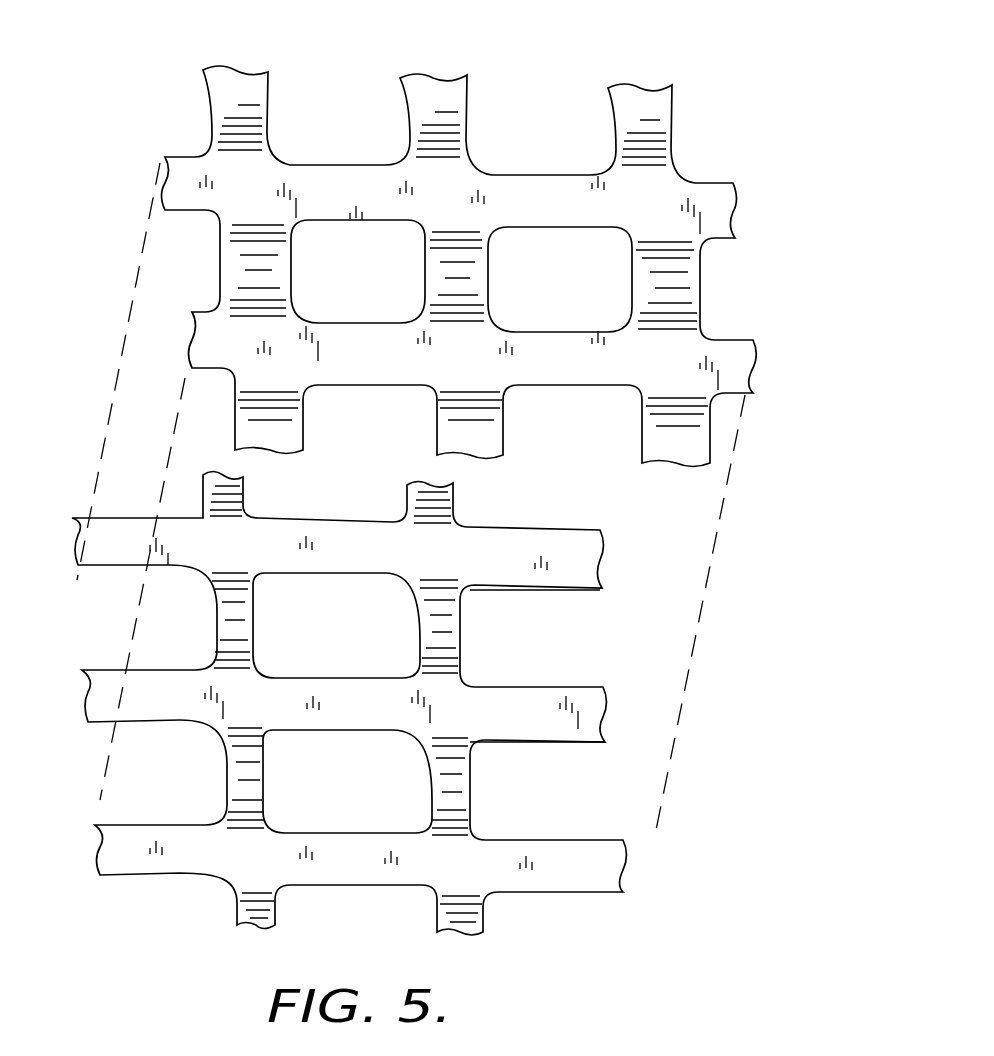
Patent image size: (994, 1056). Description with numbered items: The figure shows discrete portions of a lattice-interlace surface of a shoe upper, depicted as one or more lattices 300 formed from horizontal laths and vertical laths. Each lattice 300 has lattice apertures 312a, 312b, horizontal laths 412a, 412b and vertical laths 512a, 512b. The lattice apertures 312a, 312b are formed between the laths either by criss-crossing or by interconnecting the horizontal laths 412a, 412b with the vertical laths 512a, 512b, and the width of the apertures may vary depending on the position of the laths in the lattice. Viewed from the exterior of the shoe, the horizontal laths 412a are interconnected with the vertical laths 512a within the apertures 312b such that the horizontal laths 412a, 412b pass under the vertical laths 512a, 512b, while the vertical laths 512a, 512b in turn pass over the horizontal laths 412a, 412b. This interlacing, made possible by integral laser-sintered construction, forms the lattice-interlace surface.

The lattice 300 is at (772, 279).
The lattice aperture 312a is at (379, 238).
The lattice aperture 312b is at (316, 815).
The horizontal lath 412a is at (252, 345).
The horizontal lath 412b is at (578, 702).
The vertical lath 512a is at (655, 437).
The vertical lath 512b is at (250, 928).